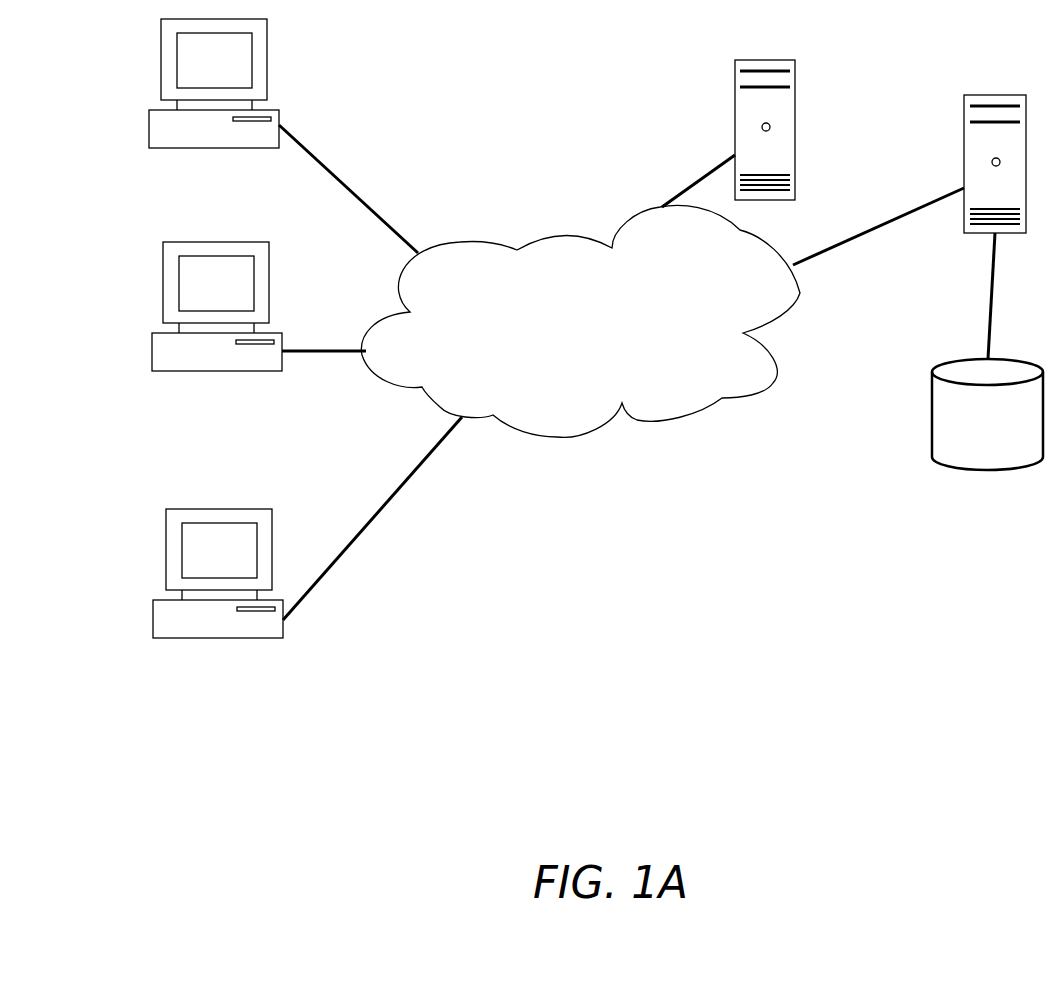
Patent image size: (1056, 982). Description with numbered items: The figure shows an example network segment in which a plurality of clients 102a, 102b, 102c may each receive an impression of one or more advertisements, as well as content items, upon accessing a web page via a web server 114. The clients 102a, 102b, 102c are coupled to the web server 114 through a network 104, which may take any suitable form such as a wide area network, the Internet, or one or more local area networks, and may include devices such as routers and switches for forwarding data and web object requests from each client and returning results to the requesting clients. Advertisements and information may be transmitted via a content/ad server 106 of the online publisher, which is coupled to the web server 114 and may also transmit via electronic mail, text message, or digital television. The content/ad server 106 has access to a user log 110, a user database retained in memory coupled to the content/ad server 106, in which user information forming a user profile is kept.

The client 102a is at (153, 120).
The client 102b is at (155, 343).
The client 102c is at (158, 610).
The network 104 is at (580, 321).
The web server 114 is at (736, 122).
The content/ad server 106 is at (965, 157).
The user log 110 is at (938, 362).